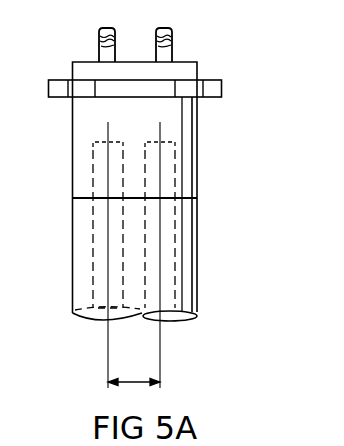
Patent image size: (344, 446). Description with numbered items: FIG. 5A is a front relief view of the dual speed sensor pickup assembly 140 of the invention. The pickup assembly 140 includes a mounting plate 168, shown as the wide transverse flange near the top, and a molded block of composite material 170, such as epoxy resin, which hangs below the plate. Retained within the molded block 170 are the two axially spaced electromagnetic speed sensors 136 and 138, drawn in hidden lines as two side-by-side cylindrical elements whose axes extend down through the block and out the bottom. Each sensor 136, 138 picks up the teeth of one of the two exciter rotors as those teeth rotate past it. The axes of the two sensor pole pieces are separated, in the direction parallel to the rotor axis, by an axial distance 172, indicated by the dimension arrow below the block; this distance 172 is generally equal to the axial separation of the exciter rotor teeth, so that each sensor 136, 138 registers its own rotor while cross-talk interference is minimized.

The dual speed sensor pickup assembly 140 is at (178, 31).
The mounting plate 168 is at (222, 89).
The molded block of composite material 170 is at (172, 121).
The electromagnetic speed sensor 138 is at (193, 223).
The electromagnetic speed sensor 136 is at (93, 166).
The axial distance 172 is at (137, 385).